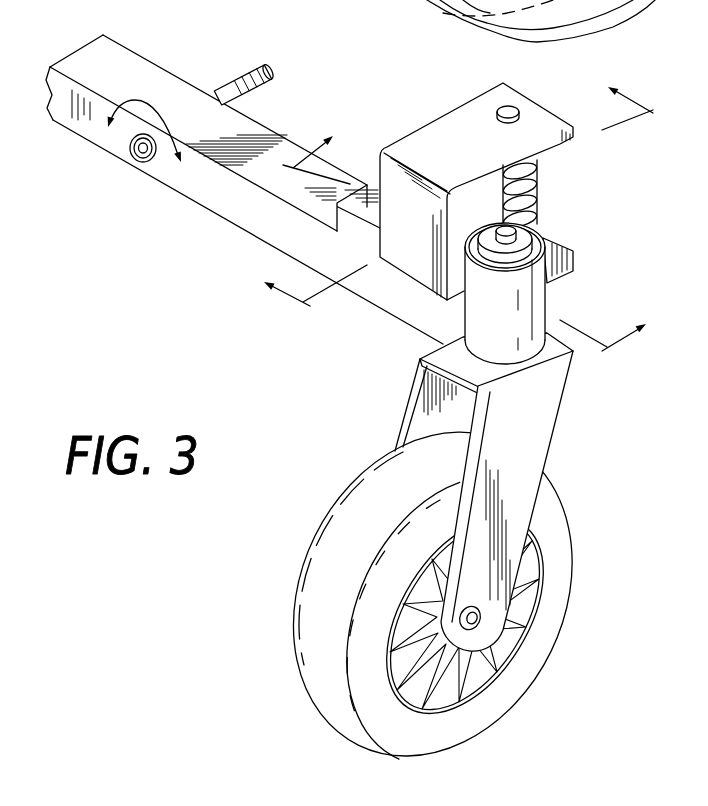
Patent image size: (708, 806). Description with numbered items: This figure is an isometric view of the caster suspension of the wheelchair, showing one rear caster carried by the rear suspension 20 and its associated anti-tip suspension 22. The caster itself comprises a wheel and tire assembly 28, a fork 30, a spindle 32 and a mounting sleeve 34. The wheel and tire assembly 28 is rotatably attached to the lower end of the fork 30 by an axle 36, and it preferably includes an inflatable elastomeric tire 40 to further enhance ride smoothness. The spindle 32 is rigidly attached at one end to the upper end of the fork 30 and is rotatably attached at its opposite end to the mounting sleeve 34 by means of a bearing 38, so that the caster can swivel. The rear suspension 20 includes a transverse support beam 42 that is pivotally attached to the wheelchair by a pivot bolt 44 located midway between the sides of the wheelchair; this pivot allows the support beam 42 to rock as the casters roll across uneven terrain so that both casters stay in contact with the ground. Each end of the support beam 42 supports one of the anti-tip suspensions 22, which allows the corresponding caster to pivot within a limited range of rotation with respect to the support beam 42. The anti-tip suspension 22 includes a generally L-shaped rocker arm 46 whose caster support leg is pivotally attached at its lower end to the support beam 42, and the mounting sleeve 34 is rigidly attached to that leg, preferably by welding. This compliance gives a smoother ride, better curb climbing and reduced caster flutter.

The rear suspension 20 is at (331, 97).
The anti-tip suspension 22 is at (391, 340).
The wheel and tire assembly 28 is at (283, 594).
The fork 30 is at (535, 457).
The spindle 32 is at (540, 212).
The mounting sleeve 34 is at (533, 313).
The axle 36 is at (482, 616).
The bearing 38 is at (527, 243).
The inflatable elastomeric tire 40 is at (517, 678).
The transverse support beam 42 is at (199, 191).
The pivot bolt 44 is at (231, 92).
The rocker arm 46 is at (420, 137).